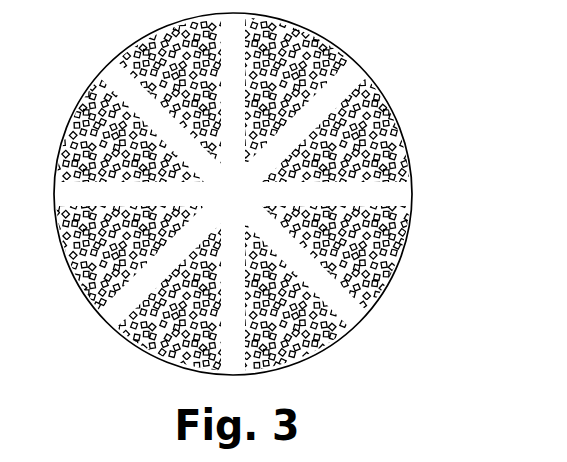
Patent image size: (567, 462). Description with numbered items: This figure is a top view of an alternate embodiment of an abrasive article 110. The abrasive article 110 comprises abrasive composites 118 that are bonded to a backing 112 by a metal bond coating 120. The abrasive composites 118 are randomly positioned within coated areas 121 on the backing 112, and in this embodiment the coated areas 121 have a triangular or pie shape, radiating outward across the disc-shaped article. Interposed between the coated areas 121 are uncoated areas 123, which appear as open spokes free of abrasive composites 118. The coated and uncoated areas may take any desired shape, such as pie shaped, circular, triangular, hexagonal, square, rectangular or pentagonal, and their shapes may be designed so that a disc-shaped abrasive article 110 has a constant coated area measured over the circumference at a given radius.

The abrasive article 110 is at (265, 194).
The backing 112 is at (413, 186).
The abrasive composites 118 is at (308, 52).
The metal bond coating 120 is at (384, 252).
The coated areas 121 is at (118, 45).
The uncoated areas 123 is at (118, 311).